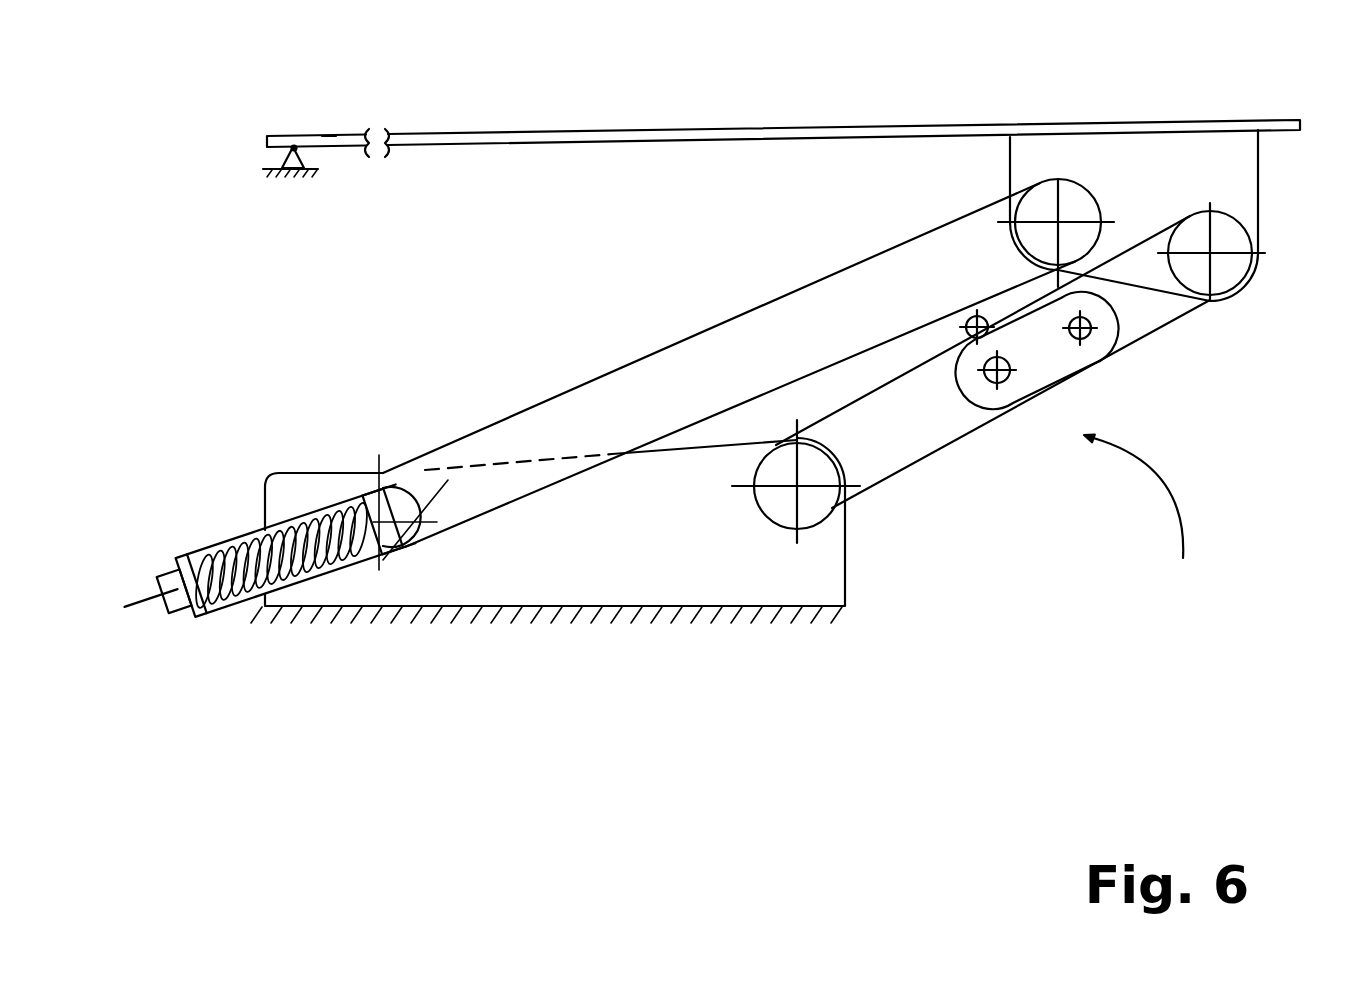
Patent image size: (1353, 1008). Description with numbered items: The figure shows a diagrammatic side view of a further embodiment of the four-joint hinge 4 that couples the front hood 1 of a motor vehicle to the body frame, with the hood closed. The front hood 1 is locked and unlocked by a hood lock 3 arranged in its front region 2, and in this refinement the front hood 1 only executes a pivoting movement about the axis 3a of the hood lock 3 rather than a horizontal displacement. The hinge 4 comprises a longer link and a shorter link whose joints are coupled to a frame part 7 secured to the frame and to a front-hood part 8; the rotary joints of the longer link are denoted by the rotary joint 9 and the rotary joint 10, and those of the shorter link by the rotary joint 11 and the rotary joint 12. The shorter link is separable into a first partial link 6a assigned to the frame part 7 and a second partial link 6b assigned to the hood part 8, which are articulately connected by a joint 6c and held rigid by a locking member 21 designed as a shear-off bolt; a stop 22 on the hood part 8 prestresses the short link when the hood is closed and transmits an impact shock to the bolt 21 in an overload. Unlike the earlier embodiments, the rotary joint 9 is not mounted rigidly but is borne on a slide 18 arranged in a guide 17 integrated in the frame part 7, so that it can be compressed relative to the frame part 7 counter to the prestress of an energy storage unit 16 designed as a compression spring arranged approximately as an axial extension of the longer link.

The front hood 1 is at (575, 131).
The front region 2 is at (329, 136).
The hood lock 3 is at (292, 162).
The axis of the hood lock 3a is at (297, 150).
The hinge 4 is at (1140, 522).
The first partial link 6a is at (928, 452).
The second partial link 6b is at (1105, 355).
The joint 6c is at (1005, 375).
The frame part 7 is at (622, 545).
The front-hood part 8 is at (1151, 187).
The rotary joint 9 is at (412, 550).
The rotary joint 10 is at (1072, 205).
The rotary joint 11 is at (775, 522).
The rotary joint 12 is at (1223, 227).
The energy storage unit 16 is at (216, 553).
The guide 17 is at (200, 618).
The slide 18 is at (386, 548).
The locking member 21 is at (1092, 333).
The stop 22 is at (960, 317).